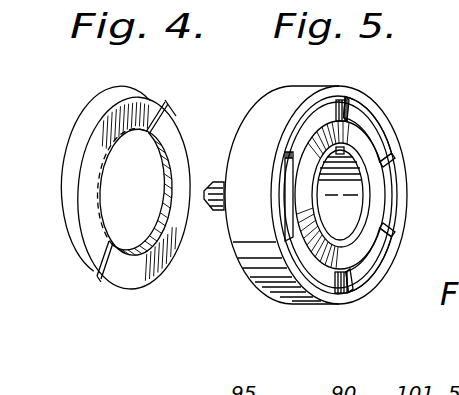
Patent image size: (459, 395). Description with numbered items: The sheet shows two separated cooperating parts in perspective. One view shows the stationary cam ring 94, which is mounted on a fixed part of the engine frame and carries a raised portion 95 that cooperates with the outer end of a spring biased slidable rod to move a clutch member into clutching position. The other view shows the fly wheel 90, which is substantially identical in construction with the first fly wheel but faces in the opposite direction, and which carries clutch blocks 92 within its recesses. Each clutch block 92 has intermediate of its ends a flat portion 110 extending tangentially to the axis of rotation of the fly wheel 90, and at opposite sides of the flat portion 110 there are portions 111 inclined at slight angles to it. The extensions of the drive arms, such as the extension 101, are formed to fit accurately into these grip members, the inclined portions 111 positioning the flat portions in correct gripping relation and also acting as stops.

In FIG. 5, the fly wheel 90 is at (249, 272).
In FIG. 5, the clutch block 92 is at (341, 100).
In FIG. 4, the stationary cam ring 94 is at (132, 288).
In FIG. 4, the raised portion 95 is at (168, 104).
In FIG. 5, the extension 101 is at (449, 103).
In FIG. 5, the flat portion 110 is at (352, 128).
In FIG. 5, the inclined portion 111 is at (352, 112).